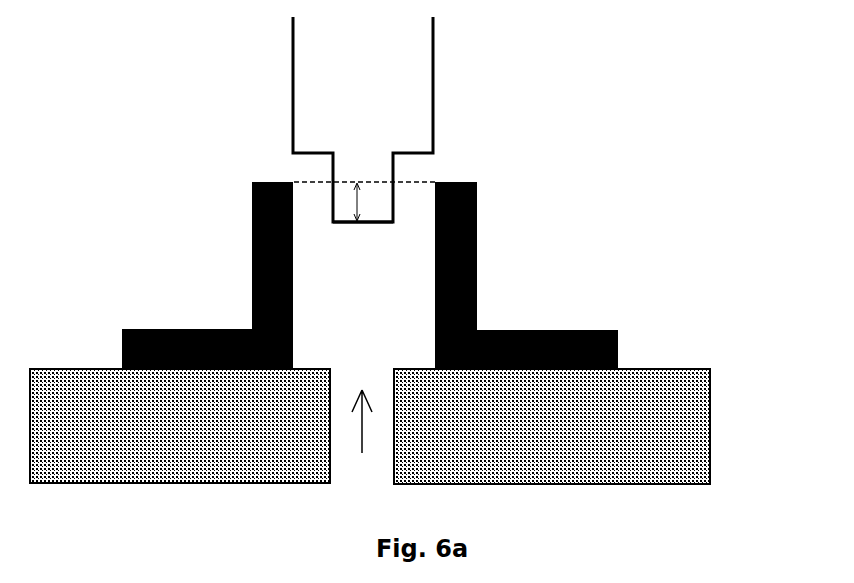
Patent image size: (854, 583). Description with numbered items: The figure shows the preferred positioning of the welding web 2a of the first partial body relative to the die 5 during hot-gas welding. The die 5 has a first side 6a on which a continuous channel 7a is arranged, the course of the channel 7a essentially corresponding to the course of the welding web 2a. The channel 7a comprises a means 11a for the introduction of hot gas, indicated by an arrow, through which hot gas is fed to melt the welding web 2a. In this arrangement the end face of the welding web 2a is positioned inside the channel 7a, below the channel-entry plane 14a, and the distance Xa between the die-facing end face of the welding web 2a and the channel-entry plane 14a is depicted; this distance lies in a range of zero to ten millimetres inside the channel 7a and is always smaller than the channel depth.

The channel-entry plane 14a is at (366, 181).
The welding web 2a is at (343, 192).
The channel 7a is at (394, 258).
The first side 6a is at (657, 366).
The die 5 is at (711, 420).
The means for the introduction of hot gas 11a is at (380, 418).